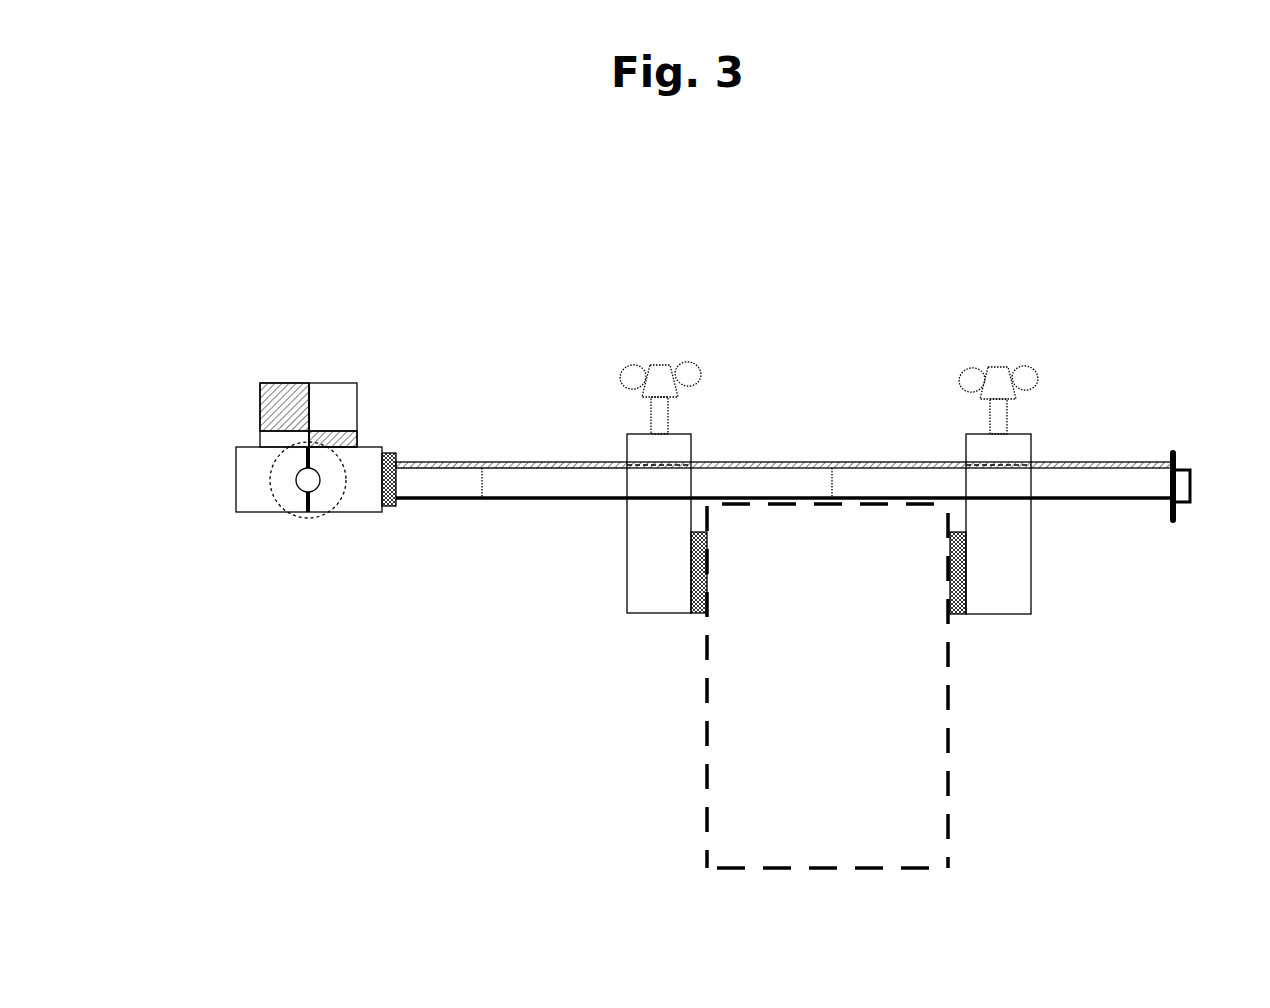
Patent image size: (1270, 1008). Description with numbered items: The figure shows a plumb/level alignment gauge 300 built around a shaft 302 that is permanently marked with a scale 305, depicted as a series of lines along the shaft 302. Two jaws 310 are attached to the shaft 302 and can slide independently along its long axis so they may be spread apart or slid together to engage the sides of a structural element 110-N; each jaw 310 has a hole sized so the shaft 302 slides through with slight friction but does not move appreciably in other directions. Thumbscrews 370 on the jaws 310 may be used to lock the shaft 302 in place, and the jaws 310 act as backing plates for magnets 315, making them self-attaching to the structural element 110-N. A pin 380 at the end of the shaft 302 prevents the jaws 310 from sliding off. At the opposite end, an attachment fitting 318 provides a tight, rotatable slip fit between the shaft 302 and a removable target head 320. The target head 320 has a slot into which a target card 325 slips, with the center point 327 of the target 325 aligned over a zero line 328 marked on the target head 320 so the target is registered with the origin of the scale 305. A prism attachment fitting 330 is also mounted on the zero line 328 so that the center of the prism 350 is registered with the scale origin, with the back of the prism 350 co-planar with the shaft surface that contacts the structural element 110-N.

The plumb/level alignment gauge 300 is at (1213, 170).
The shaft 302 is at (581, 406).
The scale 305 is at (759, 532).
The jaws 310 is at (829, 484).
The magnets 315 is at (830, 598).
The attachment fitting 318 is at (423, 450).
The target head 320 is at (263, 465).
The target card 325 is at (267, 392).
The center point of target 327 is at (367, 380).
The zero line 328 is at (359, 498).
The prism attachment fitting 330 is at (263, 513).
The prism 350 is at (278, 522).
The thumbscrews 370 is at (829, 350).
The pin 380 is at (1219, 464).
The structural element 110-N is at (861, 677).